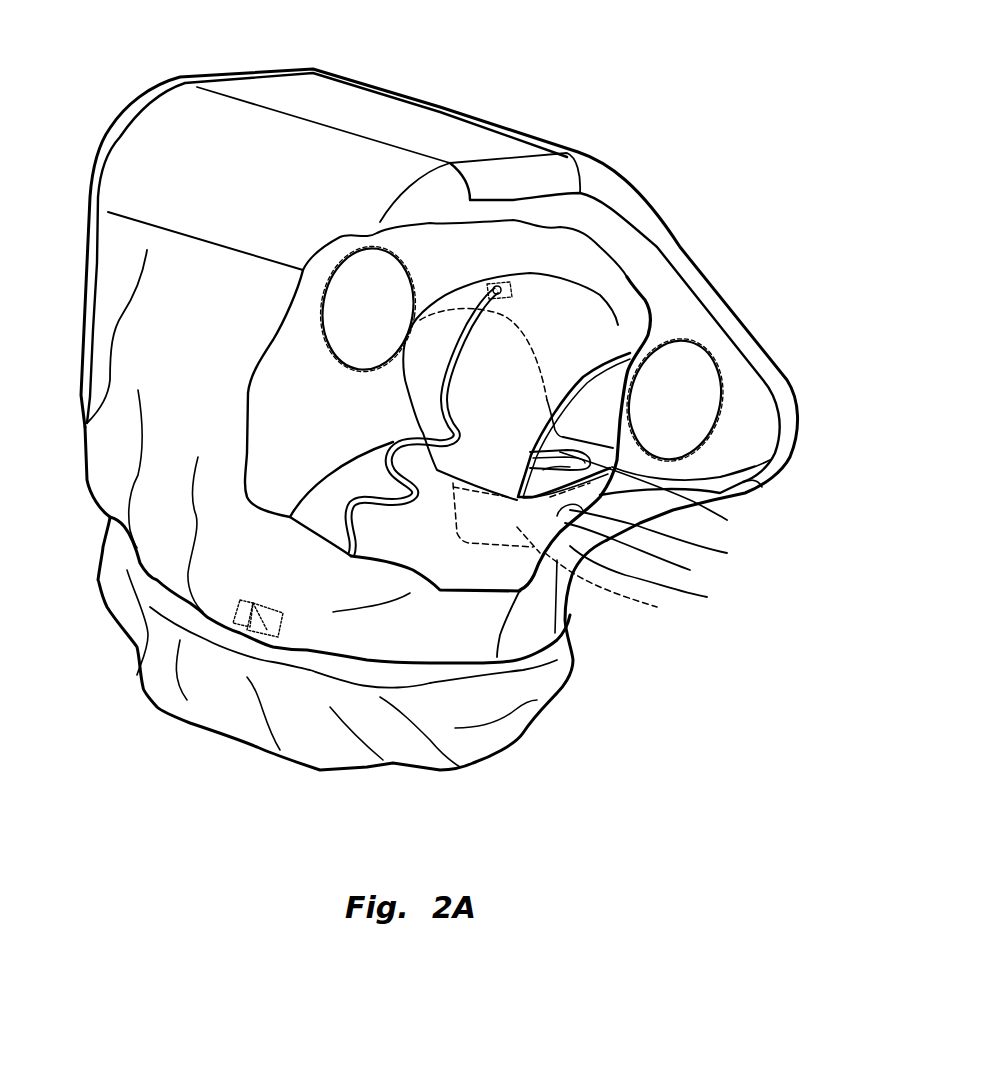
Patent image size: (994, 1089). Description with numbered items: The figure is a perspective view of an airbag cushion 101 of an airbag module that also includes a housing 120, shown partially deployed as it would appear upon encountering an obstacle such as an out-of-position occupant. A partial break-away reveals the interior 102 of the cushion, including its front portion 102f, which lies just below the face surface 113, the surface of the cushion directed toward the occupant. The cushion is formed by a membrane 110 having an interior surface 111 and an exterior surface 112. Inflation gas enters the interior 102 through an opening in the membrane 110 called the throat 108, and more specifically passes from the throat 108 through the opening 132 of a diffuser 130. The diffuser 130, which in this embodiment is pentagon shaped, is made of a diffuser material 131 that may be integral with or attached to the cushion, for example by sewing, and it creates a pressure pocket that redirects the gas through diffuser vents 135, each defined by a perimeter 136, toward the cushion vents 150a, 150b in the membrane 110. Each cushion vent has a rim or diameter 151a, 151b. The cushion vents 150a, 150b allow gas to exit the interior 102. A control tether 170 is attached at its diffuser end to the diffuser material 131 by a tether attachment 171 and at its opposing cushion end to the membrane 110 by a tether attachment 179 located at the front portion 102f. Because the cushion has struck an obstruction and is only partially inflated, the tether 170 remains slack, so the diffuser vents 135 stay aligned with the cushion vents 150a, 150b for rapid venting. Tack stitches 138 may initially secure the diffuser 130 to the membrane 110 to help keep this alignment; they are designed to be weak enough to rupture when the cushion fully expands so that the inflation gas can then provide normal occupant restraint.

The airbag cushion 101 is at (410, 117).
The interior 102 is at (455, 271).
The front portion 102f is at (306, 431).
The throat 108 is at (727, 520).
The membrane 110 is at (727, 553).
The interior surface 111 is at (690, 570).
The exterior surface 112 is at (707, 597).
The face surface 113 is at (200, 265).
The housing 120 is at (576, 552).
The diffuser 130 is at (547, 306).
The diffuser material 131 is at (563, 302).
The opening 132 is at (753, 496).
The diffuser vents 135 is at (600, 365).
The perimeters 136 is at (588, 392).
The tack stitches 138 is at (590, 298).
The cushion vent 150a is at (362, 298).
The cushion vent 150b is at (694, 410).
The rim 151a is at (345, 285).
The rim 151b is at (683, 363).
The control tether 170 is at (397, 497).
The tether attachment 171 is at (503, 277).
The tether attachment 179 is at (253, 613).